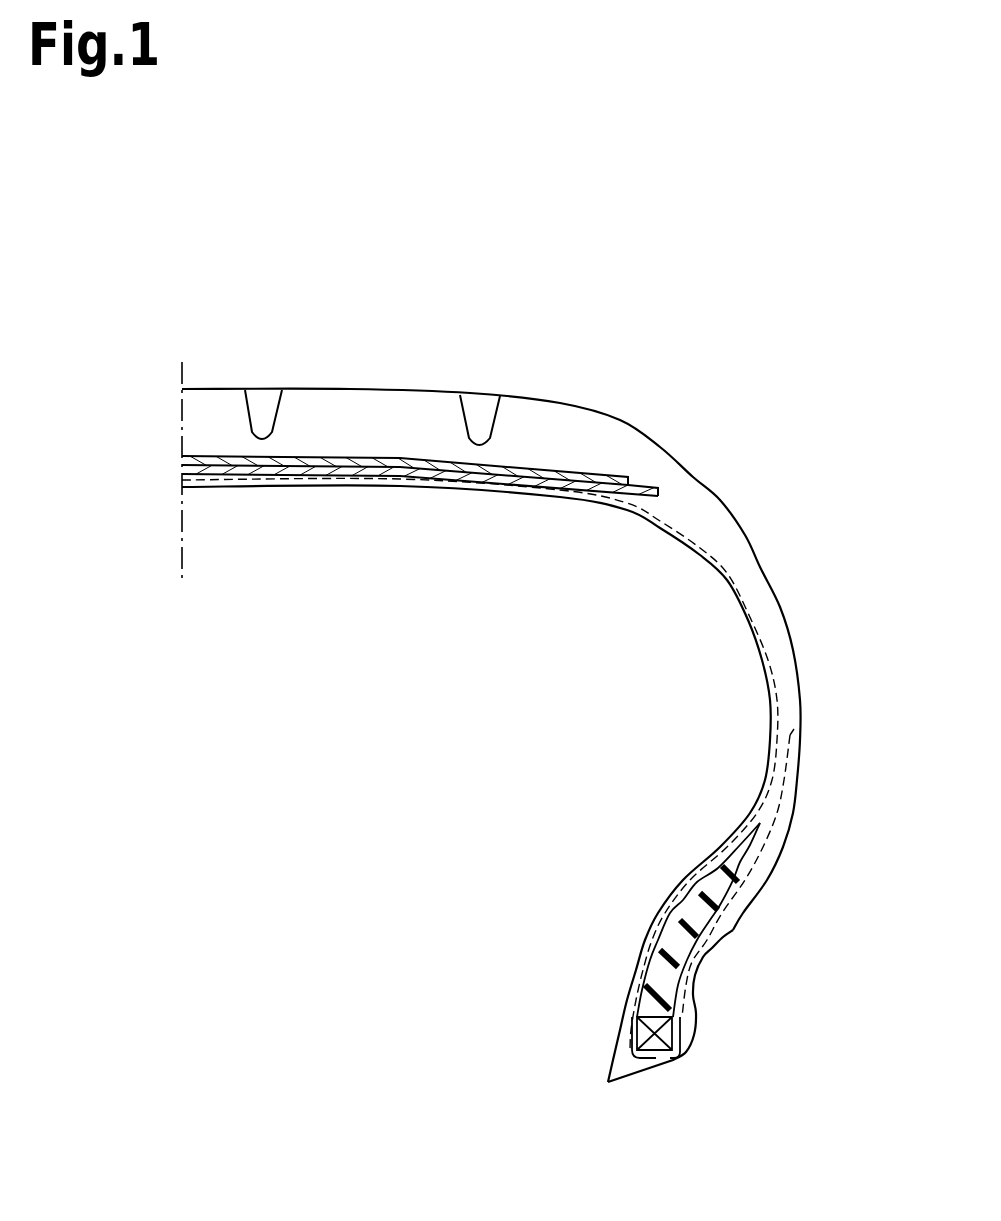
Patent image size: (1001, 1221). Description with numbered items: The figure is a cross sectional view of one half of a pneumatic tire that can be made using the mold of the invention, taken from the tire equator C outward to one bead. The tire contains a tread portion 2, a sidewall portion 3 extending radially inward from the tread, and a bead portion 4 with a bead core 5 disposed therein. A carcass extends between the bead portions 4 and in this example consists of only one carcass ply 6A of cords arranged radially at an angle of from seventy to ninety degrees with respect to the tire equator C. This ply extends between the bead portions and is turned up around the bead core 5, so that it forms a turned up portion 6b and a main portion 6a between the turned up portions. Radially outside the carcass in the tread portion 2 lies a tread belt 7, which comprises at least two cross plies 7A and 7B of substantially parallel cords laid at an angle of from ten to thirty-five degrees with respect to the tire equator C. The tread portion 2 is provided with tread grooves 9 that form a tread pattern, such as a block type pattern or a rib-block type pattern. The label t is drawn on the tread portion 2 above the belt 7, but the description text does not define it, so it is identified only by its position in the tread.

The tire equator C is at (181, 456).
The tread portion 2 is at (351, 390).
The sidewall portion 3 is at (812, 619).
The bead portion 4 is at (618, 966).
The bead core 5 is at (643, 1034).
The carcass ply 6A is at (488, 764).
The main portion 6a is at (765, 655).
The turned up portion 6b is at (792, 736).
The tread belt 7 is at (420, 579).
The cross ply 7A is at (354, 470).
The cross ply 7B is at (267, 462).
The tread groove 9 is at (270, 403).
The tread rubber thickness t is at (397, 412).